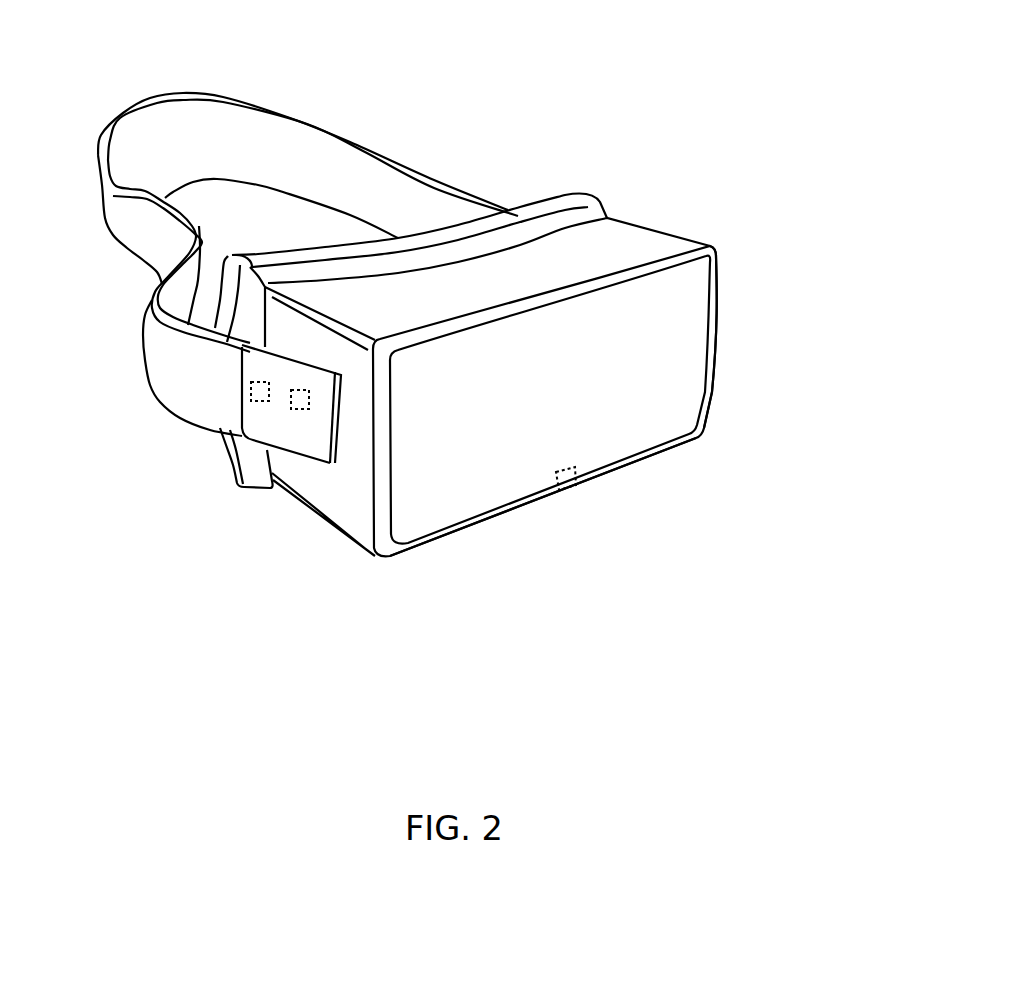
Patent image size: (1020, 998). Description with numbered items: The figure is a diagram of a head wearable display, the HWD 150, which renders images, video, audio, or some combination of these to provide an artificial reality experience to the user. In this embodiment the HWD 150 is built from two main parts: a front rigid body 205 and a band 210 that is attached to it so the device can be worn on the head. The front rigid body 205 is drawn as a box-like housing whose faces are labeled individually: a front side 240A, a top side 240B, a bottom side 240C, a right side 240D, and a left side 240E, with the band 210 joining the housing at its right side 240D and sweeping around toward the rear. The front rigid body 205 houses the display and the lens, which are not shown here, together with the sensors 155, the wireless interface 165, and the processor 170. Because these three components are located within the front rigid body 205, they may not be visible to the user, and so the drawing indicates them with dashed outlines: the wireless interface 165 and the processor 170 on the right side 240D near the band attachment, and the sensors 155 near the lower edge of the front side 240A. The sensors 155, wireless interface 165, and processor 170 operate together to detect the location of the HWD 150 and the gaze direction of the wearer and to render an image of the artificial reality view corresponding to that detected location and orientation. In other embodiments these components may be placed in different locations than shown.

The head wearable display 150 is at (63, 37).
The band 210 is at (413, 158).
The front rigid body 205 is at (462, 381).
The front side 240A is at (630, 422).
The top side 240B is at (345, 293).
The bottom side 240C is at (304, 523).
The right side 240D is at (346, 486).
The left side 240E is at (690, 233).
The wireless interface 165 is at (248, 389).
The processor 170 is at (289, 415).
The sensors 155 is at (568, 488).